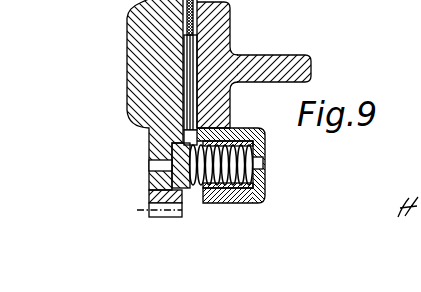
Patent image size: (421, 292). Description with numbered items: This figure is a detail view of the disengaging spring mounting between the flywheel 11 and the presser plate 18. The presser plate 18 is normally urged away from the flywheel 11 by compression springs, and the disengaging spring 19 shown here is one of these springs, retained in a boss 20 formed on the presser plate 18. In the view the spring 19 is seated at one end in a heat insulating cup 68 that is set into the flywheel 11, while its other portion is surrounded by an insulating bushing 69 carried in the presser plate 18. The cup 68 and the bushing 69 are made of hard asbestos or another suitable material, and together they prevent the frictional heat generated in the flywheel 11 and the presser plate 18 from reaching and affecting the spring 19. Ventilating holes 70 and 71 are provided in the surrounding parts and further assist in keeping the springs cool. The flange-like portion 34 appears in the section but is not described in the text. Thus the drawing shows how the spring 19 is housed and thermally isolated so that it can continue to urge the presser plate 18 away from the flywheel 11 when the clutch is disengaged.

The flywheel 11 is at (152, 79).
The presser plate 18 is at (222, 61).
The disengaging spring 19 is at (188, 182).
The boss 20 is at (237, 202).
The flange 34 is at (281, 41).
The heat insulating cup 68 is at (147, 128).
The insulating bushing 69 is at (267, 188).
The ventilating hole 70 is at (152, 167).
The ventilating hole 71 is at (258, 163).